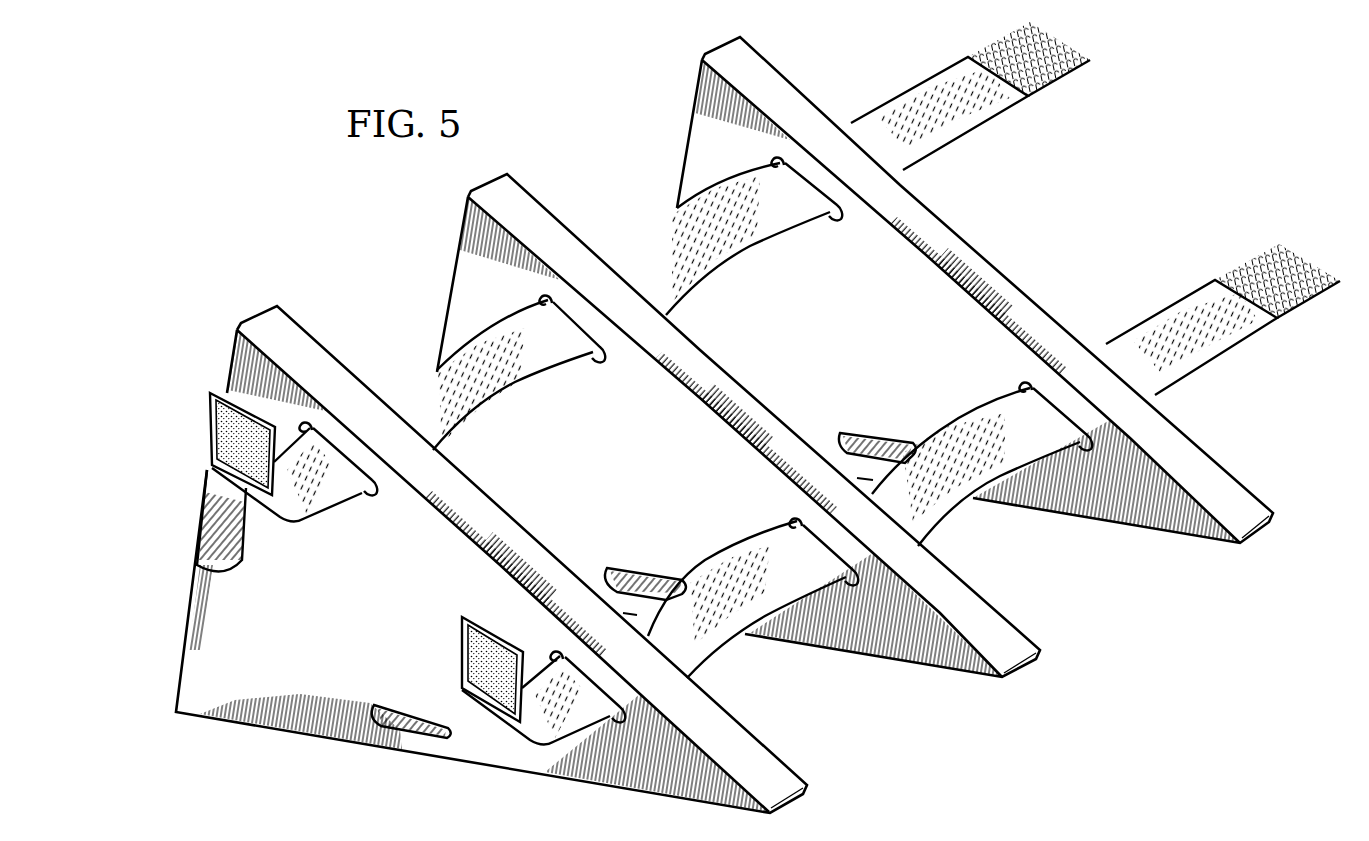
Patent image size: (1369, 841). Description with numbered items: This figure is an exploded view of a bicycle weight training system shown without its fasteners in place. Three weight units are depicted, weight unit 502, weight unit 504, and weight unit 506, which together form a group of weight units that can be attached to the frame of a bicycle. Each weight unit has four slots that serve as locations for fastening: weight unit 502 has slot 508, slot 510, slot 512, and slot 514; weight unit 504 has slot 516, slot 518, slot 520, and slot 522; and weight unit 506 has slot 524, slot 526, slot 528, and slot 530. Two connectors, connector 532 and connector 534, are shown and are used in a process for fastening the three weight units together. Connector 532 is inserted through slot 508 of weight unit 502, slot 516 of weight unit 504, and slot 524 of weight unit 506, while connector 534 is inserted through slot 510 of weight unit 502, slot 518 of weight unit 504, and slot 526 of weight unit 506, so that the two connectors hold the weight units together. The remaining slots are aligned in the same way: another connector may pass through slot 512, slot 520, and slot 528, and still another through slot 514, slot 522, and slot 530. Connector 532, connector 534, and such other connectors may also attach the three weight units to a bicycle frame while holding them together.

The weight unit 502 is at (315, 336).
The weight unit 504 is at (556, 208).
The weight unit 506 is at (803, 88).
The slot 508 is at (363, 492).
The slot 510 is at (550, 655).
The slot 512 is at (222, 538).
The slot 514 is at (408, 710).
The slot 516 is at (540, 297).
The slot 518 is at (792, 521).
The slot 520 is at (477, 416).
The slot 522 is at (645, 575).
The slot 524 is at (773, 160).
The slot 526 is at (1026, 386).
The slot 528 is at (706, 279).
The slot 530 is at (880, 440).
The connector 532 is at (918, 88).
The connector 534 is at (1168, 311).